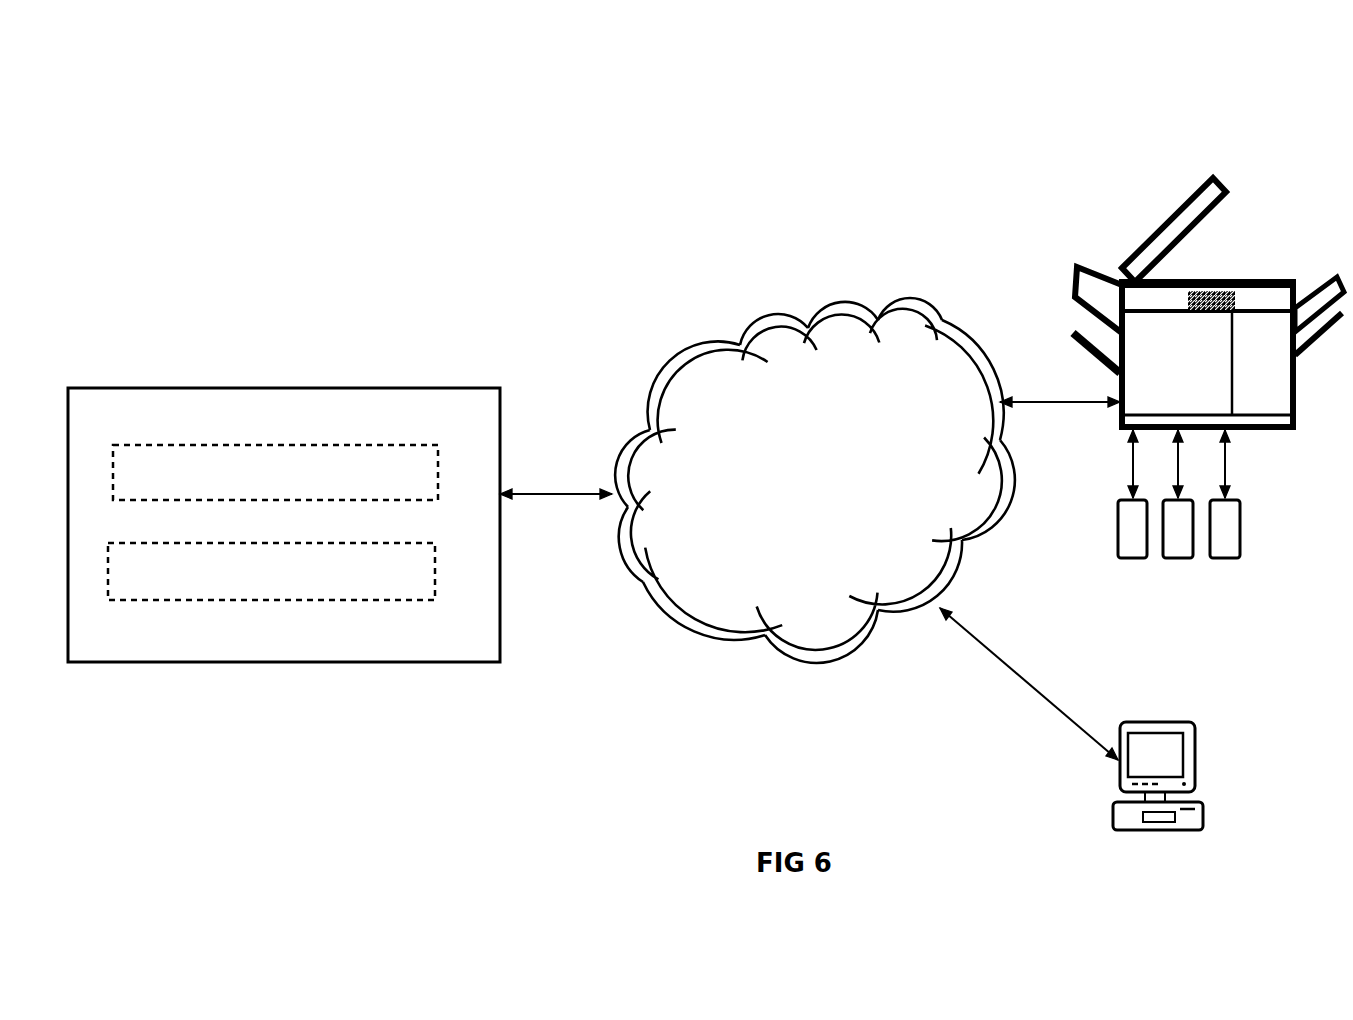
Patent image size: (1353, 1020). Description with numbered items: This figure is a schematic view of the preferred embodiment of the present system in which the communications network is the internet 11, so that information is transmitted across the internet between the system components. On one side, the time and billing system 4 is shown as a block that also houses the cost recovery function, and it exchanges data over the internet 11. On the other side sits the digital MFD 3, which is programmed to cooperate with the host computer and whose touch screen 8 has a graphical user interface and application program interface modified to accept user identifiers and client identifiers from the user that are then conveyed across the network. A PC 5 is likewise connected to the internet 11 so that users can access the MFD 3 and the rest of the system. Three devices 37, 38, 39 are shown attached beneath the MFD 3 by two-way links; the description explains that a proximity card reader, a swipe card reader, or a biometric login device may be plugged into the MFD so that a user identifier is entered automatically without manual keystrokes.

The digital MFD 3 is at (1208, 248).
The time and billing system 4 is at (328, 445).
The PC 5 is at (1197, 755).
The touch screen 8 is at (1212, 283).
The internet 11 is at (780, 315).
The peripheral device 37 is at (1127, 558).
The peripheral device 38 is at (1173, 558).
The peripheral device 39 is at (1222, 558).